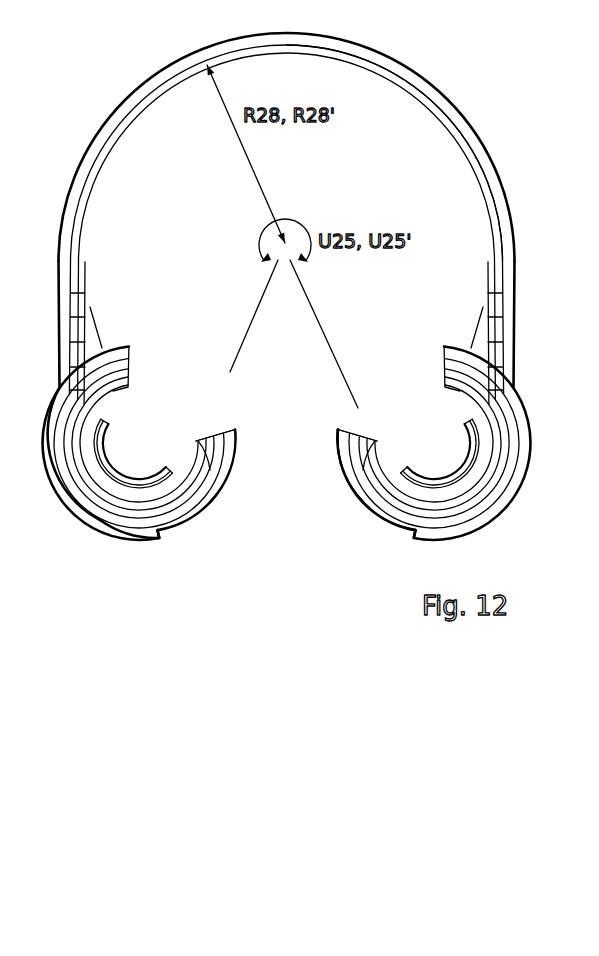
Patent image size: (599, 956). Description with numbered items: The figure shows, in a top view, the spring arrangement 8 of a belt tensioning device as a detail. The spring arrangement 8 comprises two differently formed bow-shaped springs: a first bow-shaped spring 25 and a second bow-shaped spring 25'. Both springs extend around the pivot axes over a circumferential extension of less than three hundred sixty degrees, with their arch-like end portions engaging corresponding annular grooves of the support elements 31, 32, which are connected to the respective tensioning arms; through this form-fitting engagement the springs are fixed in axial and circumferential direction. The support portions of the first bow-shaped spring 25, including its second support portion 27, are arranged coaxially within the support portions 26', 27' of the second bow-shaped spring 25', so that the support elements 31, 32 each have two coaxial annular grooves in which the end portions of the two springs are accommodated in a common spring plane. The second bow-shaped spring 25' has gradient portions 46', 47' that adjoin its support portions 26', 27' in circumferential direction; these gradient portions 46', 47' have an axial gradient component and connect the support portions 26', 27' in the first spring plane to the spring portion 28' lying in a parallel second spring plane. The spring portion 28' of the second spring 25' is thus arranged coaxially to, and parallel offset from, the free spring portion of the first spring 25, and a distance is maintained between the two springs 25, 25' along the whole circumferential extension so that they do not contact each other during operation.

The spring arrangement 8 is at (119, 90).
The first bow-shaped spring 25 is at (116, 333).
The second bow-shaped spring 25' is at (504, 237).
The spring portion of the second bow-shaped spring 28' is at (423, 153).
The gradient portion 46' is at (46, 341).
The gradient portion 47' is at (525, 341).
The support element 31 is at (207, 448).
The support element 32 is at (362, 437).
The support portion of the second bow-shaped spring 26' is at (118, 552).
The support portion of the second bow-shaped spring 27' is at (447, 484).
The second support portion 27 is at (50, 467).